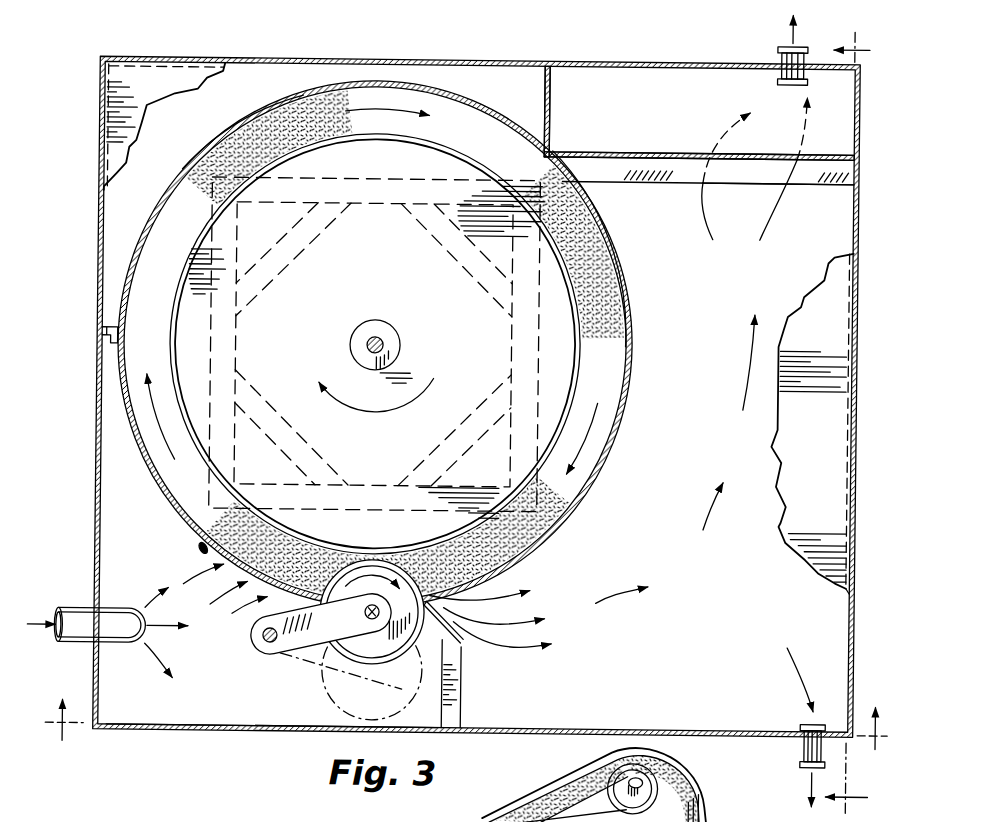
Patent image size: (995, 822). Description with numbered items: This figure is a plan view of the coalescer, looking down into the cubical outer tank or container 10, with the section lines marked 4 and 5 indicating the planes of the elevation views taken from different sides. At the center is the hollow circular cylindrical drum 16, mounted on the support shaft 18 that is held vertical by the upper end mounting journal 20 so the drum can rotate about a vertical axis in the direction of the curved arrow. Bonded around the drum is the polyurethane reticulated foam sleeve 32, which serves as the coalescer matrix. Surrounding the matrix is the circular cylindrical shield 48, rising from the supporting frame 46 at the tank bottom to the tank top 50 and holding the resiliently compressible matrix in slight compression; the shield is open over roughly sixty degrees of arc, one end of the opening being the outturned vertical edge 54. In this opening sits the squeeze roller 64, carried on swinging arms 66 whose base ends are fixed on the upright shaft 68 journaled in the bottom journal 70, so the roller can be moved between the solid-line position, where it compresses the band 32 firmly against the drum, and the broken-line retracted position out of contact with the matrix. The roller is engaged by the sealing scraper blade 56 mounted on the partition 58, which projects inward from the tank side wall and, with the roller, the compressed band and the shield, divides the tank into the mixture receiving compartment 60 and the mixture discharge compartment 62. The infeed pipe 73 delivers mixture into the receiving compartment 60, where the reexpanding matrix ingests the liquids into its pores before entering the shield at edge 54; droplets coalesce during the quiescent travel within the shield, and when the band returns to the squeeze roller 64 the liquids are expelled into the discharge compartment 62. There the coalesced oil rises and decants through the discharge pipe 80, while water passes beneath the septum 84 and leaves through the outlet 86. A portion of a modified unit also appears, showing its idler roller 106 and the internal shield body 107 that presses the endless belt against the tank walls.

The outer tank or container 10 is at (246, 64).
The drum 16 is at (195, 156).
The support shaft 18 is at (382, 344).
The upper end mounting journal 20 is at (397, 366).
The polyurethane reticulated foam sleeve 32 is at (175, 484).
The supporting frame 46 is at (625, 264).
The circular cylindrical shield 48 is at (141, 456).
The tank top 50 is at (100, 166).
The outturned vertical edge 54 is at (202, 551).
The sealing scraper blade 56 is at (446, 641).
The partition 58 is at (466, 688).
The mixture receiving compartment 60 is at (212, 712).
The mixture discharge compartment 62 is at (832, 603).
The squeeze roller 64 is at (327, 682).
The swinging arms 66 is at (301, 658).
The upright shaft 68 is at (267, 639).
The bottom journal 70 is at (102, 346).
The infeed pipe 73 is at (78, 616).
The discharge pipe 80 is at (802, 748).
The septum 84 is at (831, 186).
The outlet 86 is at (773, 50).
The idler roller 106 is at (601, 762).
The internal shield body 107 is at (546, 785).
The section line 4- 4 is at (466, 730).
The section line 5- 5 is at (852, 421).